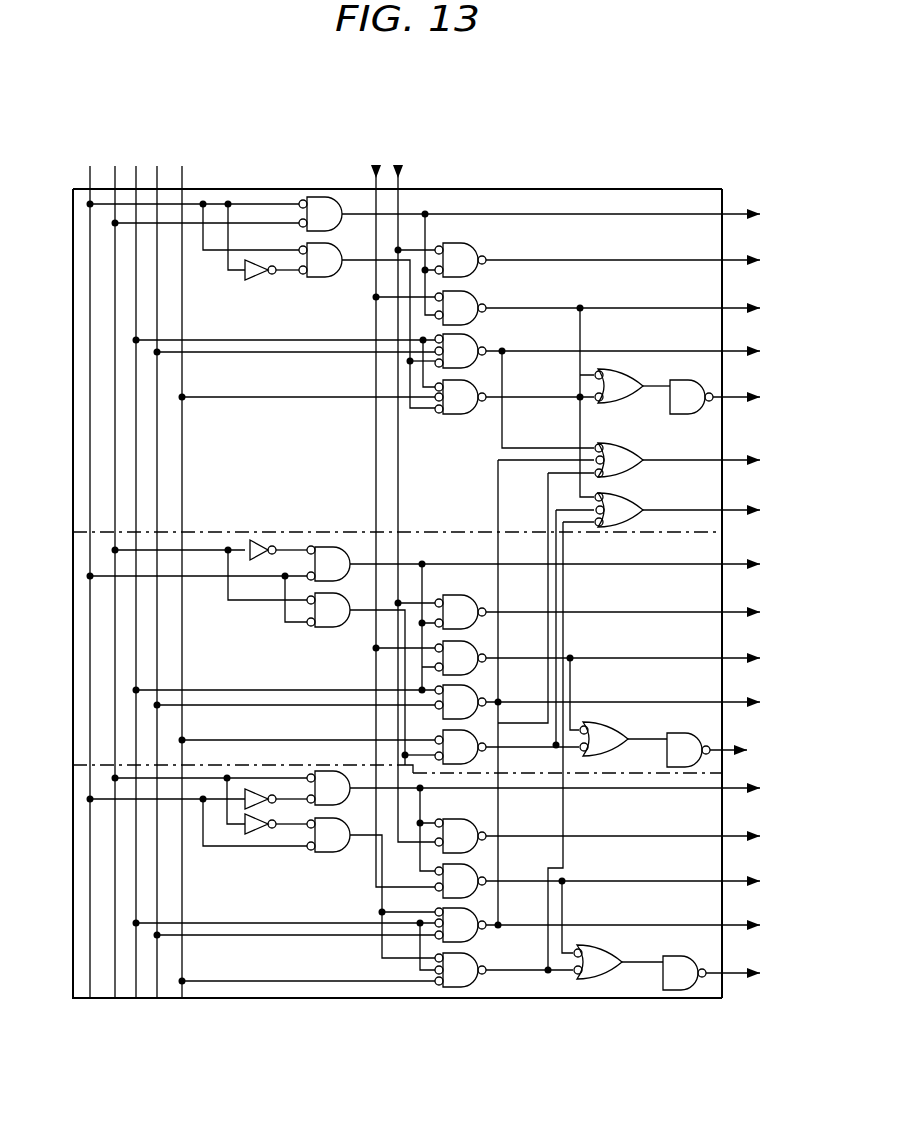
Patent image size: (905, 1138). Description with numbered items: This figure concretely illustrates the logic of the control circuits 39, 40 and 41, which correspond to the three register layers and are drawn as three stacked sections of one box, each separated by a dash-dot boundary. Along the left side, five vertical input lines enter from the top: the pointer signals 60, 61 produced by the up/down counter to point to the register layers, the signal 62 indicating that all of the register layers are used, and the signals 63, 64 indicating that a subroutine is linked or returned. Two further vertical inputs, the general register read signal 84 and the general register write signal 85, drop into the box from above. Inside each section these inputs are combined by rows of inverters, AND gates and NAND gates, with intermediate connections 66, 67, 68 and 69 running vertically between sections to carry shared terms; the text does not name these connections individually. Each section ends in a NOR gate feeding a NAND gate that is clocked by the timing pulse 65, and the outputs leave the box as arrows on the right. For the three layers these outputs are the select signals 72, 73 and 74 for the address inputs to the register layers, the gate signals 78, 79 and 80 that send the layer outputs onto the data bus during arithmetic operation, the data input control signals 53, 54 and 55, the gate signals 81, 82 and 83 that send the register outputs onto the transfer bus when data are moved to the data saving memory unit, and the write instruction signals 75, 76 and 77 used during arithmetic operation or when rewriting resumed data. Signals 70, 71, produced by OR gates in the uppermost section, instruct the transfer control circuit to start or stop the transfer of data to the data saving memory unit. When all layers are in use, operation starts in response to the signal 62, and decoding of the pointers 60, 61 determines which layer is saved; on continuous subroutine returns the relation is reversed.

The control circuit 39 is at (73, 362).
The control circuit 40 is at (73, 638).
The control circuit 41 is at (73, 884).
The data input control signal 53 is at (755, 307).
The data input control signal 54 is at (748, 657).
The data input control signal 55 is at (748, 880).
The pointer signal 60 is at (89, 167).
The pointer signal 61 is at (115, 167).
The all-layers-used signal 62 is at (136, 167).
The subroutine link/return signal 63 is at (157, 167).
The subroutine link/return signal 64 is at (182, 167).
The timing pulse 65 is at (658, 406).
The connecting line 66 is at (498, 870).
The connecting line 67 is at (562, 858).
The connecting line 68 is at (498, 638).
The connecting line 69 is at (556, 628).
The data saving memory unit start/stop signal 70 is at (752, 458).
The data saving memory unit start/stop signal 71 is at (752, 508).
The address input select signal 72 is at (740, 213).
The address input select signal 73 is at (745, 563).
The address input select signal 74 is at (745, 787).
The write instruction signal 75 is at (752, 395).
The write instruction signal 76 is at (735, 748).
The write instruction signal 77 is at (748, 972).
The gate signal 78 is at (752, 259).
The gate signal 79 is at (748, 611).
The gate signal 80 is at (748, 835).
The gate signal 81 is at (755, 350).
The gate signal 82 is at (748, 701).
The gate signal 83 is at (748, 924).
The general register read signal 84 is at (376, 165).
The general register write signal 85 is at (398, 165).